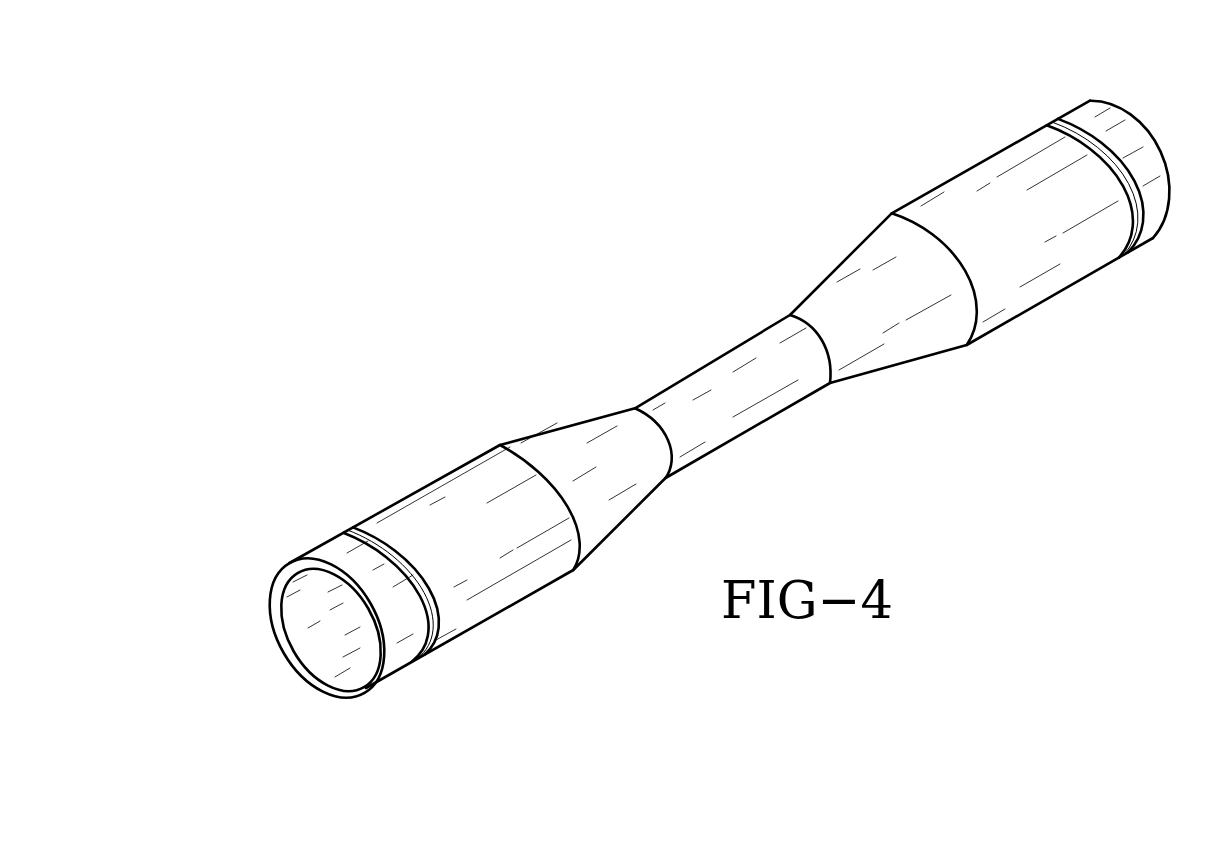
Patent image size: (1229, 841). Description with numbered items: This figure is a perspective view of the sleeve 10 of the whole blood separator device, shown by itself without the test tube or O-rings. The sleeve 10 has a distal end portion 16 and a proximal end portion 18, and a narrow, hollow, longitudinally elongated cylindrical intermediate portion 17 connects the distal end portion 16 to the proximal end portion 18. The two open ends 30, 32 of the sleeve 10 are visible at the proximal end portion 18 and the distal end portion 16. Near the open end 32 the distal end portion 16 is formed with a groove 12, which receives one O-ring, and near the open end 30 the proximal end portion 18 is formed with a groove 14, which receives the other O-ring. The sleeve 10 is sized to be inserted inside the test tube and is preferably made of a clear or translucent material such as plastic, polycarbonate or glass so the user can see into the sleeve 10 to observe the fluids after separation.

The sleeve body 10 is at (701, 386).
The groove 12 is at (418, 600).
The groove 14 is at (1118, 189).
The distal end portion 16 is at (410, 490).
The intermediate portion 17 is at (702, 363).
The proximal end portion 18 is at (958, 175).
The open end 30 is at (1155, 143).
The open end 32 is at (312, 635).